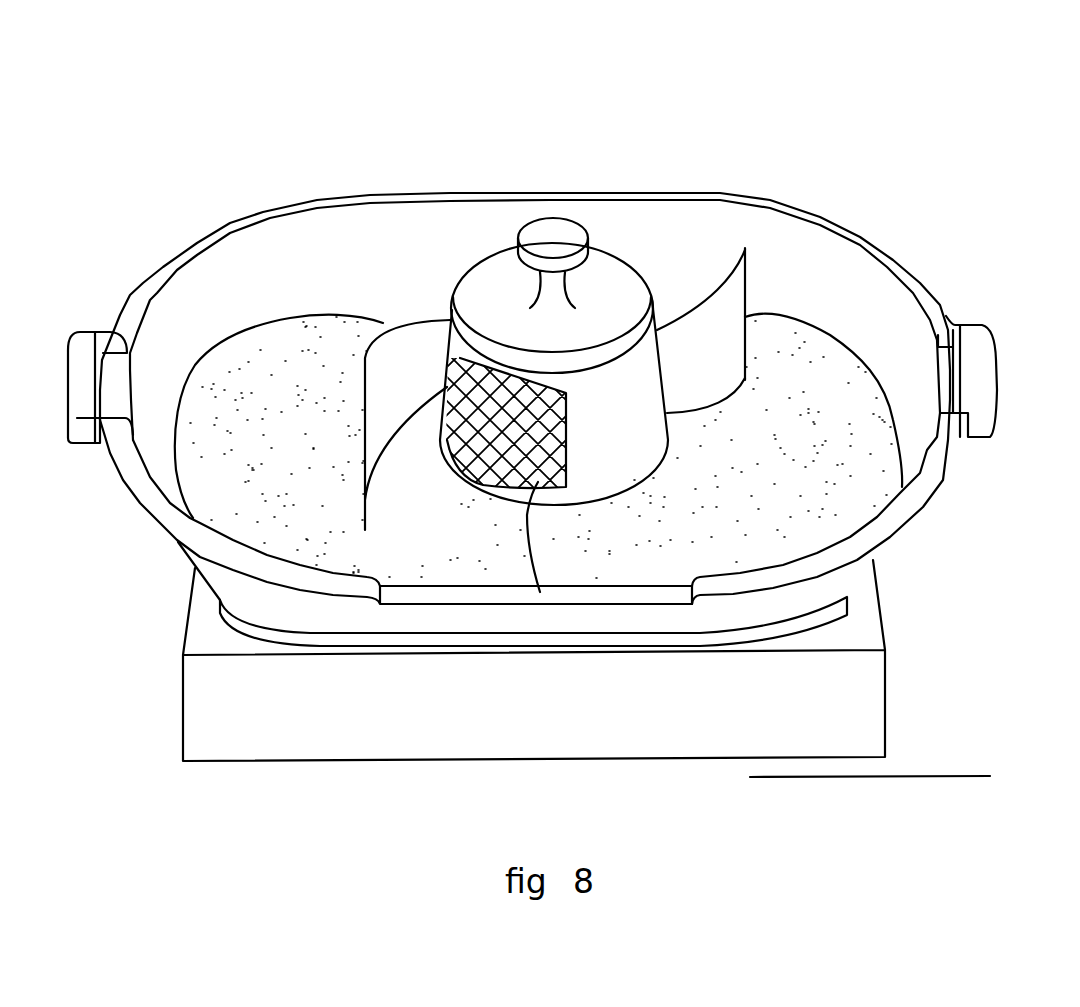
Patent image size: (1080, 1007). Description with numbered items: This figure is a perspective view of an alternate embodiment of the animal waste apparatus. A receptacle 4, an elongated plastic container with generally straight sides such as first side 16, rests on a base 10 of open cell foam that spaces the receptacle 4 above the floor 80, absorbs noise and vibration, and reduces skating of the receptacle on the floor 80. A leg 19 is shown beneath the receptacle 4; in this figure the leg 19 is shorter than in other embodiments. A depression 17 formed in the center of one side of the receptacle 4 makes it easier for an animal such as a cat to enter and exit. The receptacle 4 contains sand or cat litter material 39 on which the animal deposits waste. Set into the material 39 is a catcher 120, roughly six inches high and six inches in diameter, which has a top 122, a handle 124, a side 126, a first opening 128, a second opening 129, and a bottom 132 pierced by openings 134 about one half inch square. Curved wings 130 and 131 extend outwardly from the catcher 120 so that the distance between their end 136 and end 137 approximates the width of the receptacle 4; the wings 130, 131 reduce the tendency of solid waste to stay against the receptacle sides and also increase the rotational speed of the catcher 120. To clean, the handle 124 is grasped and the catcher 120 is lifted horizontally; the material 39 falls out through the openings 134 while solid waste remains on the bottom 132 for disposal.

The receptacle 4 is at (925, 222).
The base 10 is at (933, 655).
The first side 16 is at (438, 223).
The depression 17 is at (623, 593).
The leg 19 is at (252, 622).
The material 39 is at (252, 460).
The floor 80 is at (853, 777).
The catcher 120 is at (638, 212).
The top 122 is at (614, 252).
The handle 124 is at (550, 218).
The side 126 is at (667, 457).
The first opening 128 is at (540, 592).
The second opening 129 is at (650, 285).
The wing 130 is at (398, 343).
The wing 131 is at (747, 287).
The bottom 132 is at (517, 473).
The openings 134 is at (497, 443).
The end 136 is at (365, 470).
The end 137 is at (745, 335).